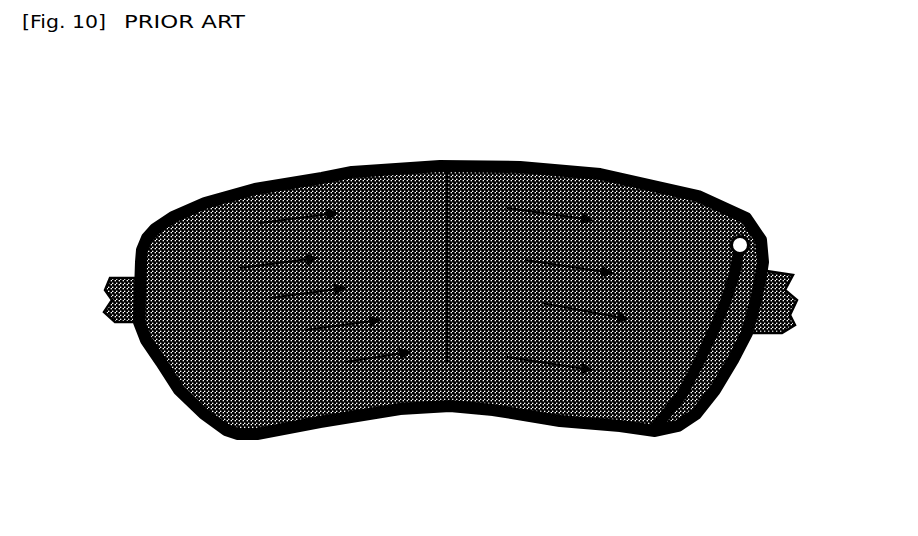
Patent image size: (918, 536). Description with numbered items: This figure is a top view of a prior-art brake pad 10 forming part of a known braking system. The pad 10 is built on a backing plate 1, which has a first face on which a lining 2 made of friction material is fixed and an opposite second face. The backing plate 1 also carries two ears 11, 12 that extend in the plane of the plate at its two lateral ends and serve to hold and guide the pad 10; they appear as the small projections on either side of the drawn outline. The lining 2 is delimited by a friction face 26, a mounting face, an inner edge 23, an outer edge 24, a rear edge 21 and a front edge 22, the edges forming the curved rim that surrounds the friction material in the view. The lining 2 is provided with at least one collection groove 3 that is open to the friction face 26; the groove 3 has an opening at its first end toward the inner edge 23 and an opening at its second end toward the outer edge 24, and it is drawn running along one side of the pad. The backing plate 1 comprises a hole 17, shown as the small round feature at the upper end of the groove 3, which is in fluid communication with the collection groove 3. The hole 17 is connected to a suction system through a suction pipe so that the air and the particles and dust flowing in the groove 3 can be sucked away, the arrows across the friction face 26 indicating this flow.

The brake pad 10 is at (184, 157).
The backing plate 1 is at (493, 417).
The lining 2 is at (655, 227).
The collection groove 3 is at (745, 325).
The ear 11 is at (785, 278).
The ear 12 is at (127, 293).
The hole 17 is at (745, 227).
The rear edge 21 is at (723, 388).
The front edge 22 is at (158, 352).
The inner edge 23 is at (393, 418).
The outer edge 24 is at (483, 160).
The friction face 26 is at (393, 217).